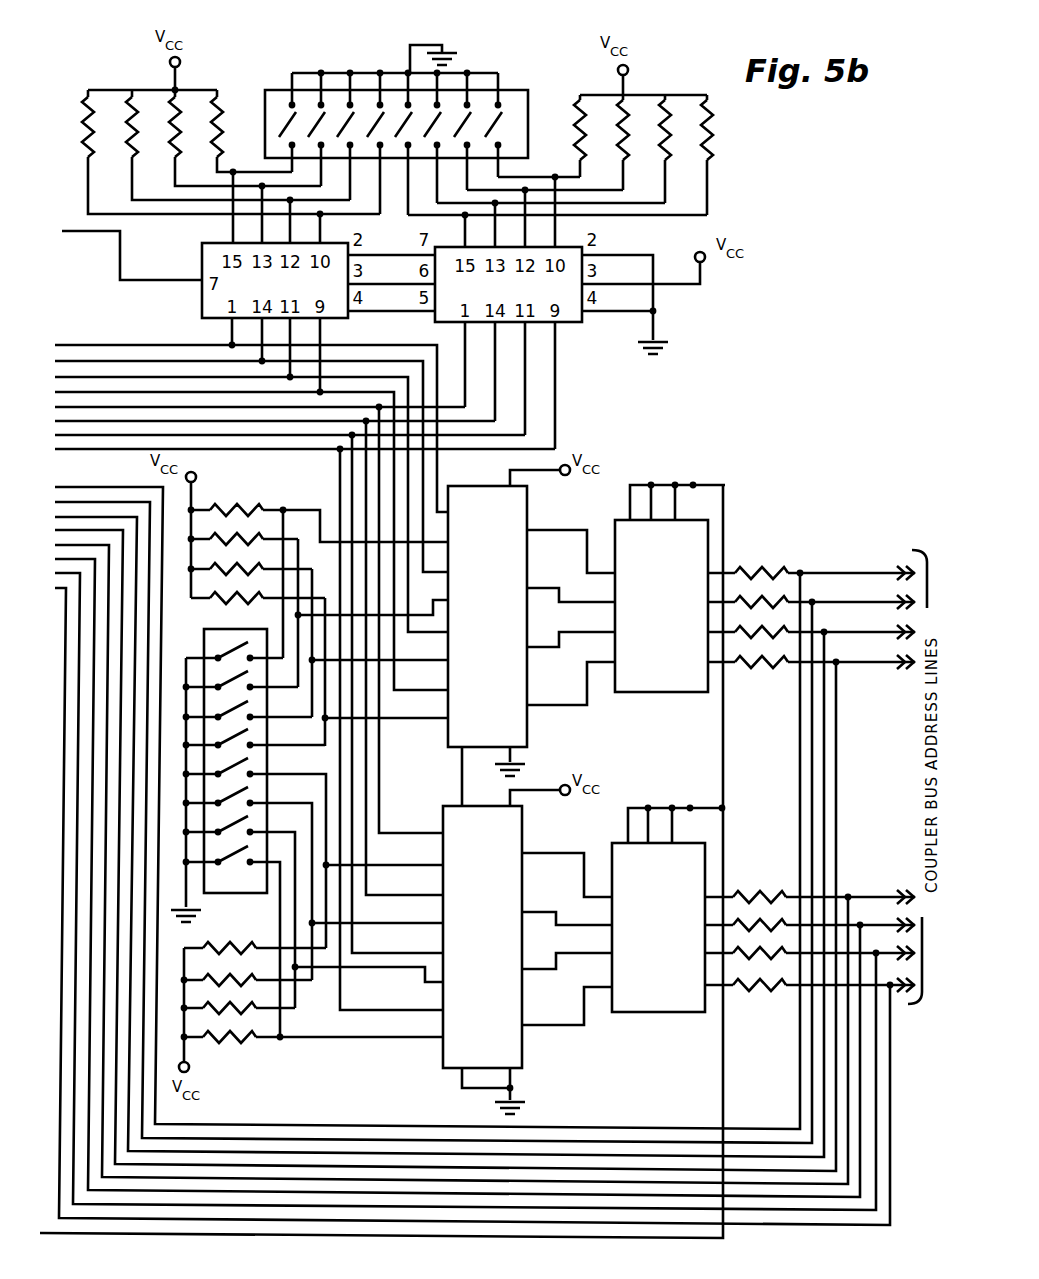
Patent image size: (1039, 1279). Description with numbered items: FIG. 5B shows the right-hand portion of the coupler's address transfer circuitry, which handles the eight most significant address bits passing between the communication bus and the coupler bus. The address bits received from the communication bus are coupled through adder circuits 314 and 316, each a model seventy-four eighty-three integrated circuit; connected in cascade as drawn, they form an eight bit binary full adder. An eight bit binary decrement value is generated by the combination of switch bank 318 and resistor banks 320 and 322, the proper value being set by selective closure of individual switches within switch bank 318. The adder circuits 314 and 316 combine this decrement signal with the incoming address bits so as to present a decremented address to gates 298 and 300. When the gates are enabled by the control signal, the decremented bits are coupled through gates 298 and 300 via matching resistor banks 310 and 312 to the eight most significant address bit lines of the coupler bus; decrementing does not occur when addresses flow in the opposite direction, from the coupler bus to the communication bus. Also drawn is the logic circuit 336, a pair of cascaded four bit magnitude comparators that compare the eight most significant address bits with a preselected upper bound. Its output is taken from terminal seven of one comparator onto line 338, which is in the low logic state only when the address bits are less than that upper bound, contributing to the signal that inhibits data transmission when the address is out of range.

The gate 298 is at (640, 692).
The gate 300 is at (652, 1012).
The matching resistor bank 310 is at (786, 553).
The matching resistor bank 312 is at (786, 876).
The adder circuit 314 is at (527, 503).
The adder circuit 316 is at (522, 835).
The switch bank 318 is at (216, 893).
The resistor bank 320 is at (262, 498).
The resistor bank 322 is at (264, 1087).
The logic circuit 336 is at (786, 141).
The line 338 is at (124, 264).